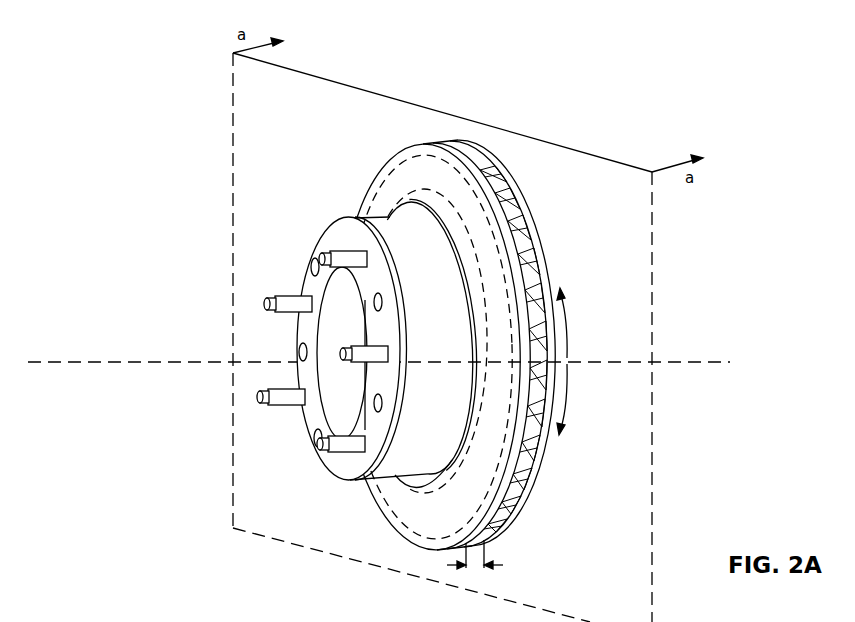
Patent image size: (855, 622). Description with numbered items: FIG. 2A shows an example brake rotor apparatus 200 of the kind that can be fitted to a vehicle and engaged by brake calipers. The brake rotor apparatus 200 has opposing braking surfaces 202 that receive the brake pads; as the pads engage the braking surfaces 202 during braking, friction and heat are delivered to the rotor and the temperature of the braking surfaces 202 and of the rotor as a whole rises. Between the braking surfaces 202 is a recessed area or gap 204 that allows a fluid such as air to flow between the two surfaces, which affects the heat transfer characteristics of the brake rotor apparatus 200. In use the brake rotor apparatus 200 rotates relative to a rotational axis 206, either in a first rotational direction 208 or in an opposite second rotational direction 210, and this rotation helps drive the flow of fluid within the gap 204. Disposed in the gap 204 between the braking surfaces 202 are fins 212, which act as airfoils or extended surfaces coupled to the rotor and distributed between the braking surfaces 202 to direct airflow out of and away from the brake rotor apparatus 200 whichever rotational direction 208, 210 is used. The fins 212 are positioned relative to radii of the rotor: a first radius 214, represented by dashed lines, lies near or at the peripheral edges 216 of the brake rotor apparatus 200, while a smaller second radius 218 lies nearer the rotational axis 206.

The brake rotor apparatus 200 is at (742, 92).
The braking surfaces 202 is at (393, 497).
The gap 204 is at (476, 566).
The rotational axis 206 is at (708, 362).
The first rotational direction 208 is at (568, 388).
The second rotational direction 210 is at (568, 333).
The fins 212 is at (539, 270).
The first radius 214 is at (381, 183).
The peripheral edges 216 is at (477, 153).
The second radius 218 is at (387, 219).